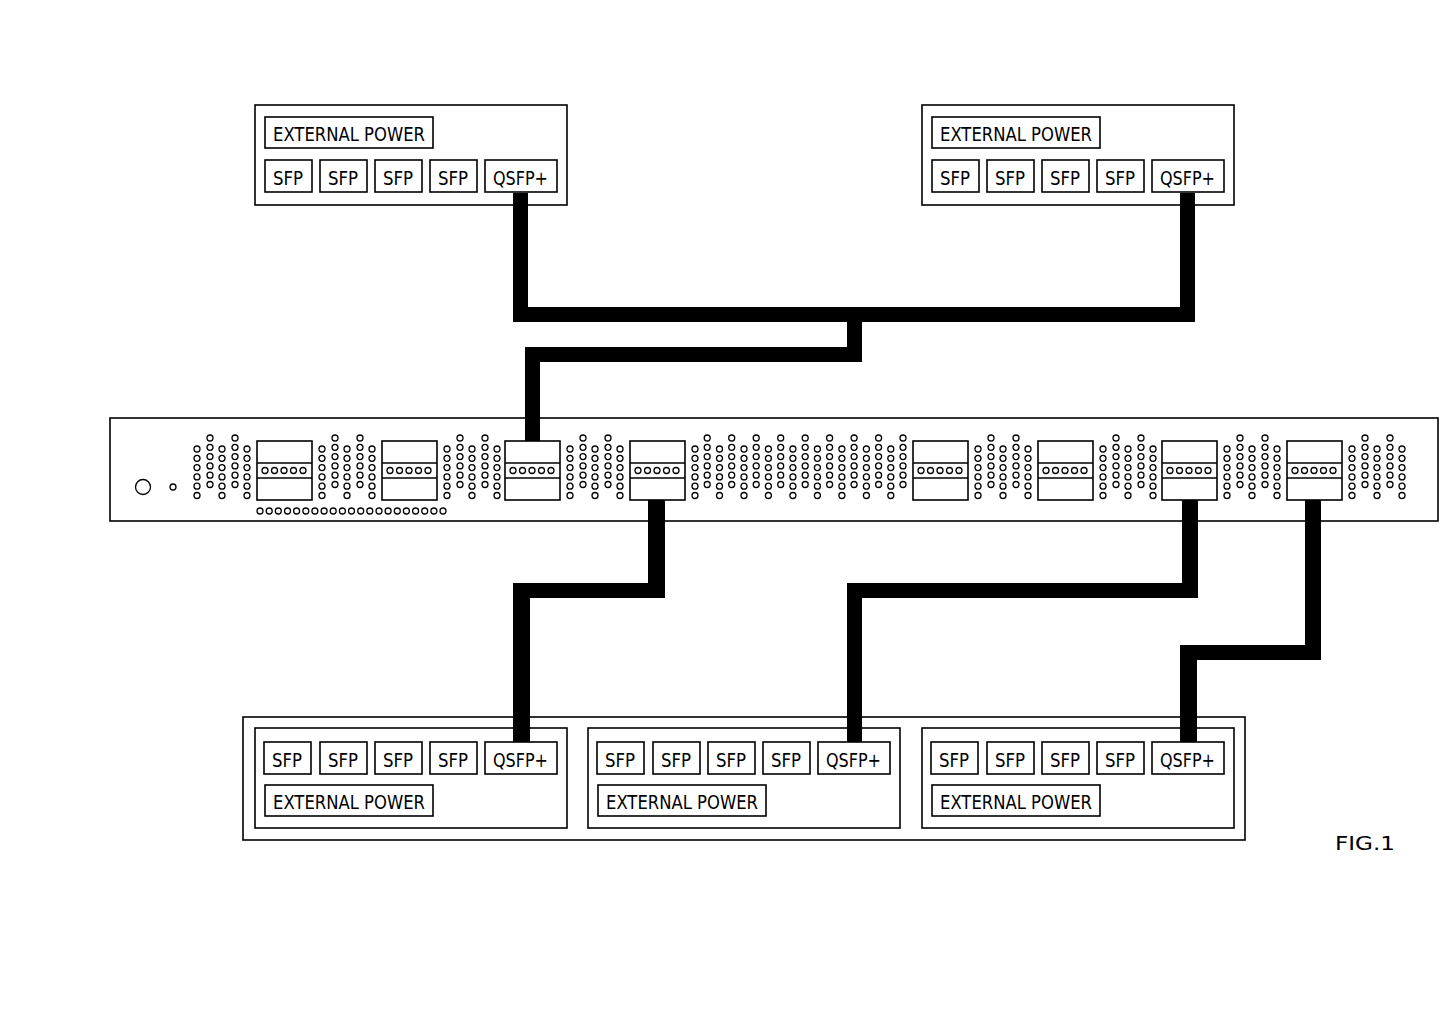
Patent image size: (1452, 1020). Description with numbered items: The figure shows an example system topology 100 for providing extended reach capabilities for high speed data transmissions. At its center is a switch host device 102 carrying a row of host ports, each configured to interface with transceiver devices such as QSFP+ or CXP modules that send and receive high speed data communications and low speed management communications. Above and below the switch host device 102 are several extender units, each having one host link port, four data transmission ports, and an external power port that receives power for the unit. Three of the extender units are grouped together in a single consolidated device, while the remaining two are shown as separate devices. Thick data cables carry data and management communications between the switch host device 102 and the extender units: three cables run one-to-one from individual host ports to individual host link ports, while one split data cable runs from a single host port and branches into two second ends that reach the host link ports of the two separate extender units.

The system topology 100 is at (1363, 215).
The switch host device 102 is at (187, 418).